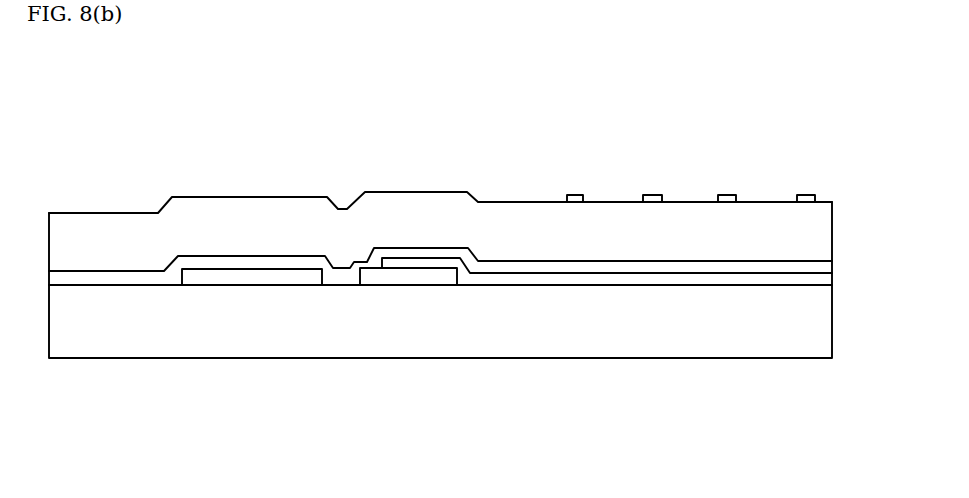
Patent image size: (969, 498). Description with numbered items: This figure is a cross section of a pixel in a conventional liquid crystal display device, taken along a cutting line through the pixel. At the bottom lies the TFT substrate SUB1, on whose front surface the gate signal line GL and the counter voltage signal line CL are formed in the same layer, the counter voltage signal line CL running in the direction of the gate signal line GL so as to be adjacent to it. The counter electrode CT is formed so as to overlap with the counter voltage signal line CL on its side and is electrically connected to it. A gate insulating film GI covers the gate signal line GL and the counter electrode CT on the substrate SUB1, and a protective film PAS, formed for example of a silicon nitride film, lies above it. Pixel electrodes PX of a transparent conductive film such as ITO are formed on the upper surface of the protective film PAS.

The TFT substrate SUB1 is at (152, 317).
The protective film PAS is at (235, 222).
The gate insulating film GI is at (584, 267).
The counter electrode CT is at (717, 280).
The gate signal line GL is at (282, 279).
The counter voltage signal line CL is at (433, 278).
The pixel electrode PX is at (575, 196).